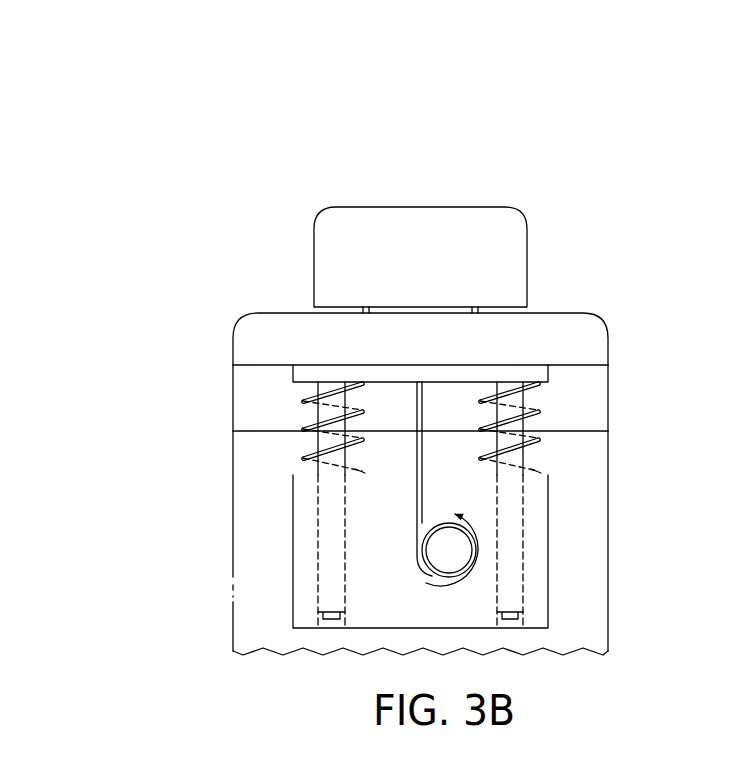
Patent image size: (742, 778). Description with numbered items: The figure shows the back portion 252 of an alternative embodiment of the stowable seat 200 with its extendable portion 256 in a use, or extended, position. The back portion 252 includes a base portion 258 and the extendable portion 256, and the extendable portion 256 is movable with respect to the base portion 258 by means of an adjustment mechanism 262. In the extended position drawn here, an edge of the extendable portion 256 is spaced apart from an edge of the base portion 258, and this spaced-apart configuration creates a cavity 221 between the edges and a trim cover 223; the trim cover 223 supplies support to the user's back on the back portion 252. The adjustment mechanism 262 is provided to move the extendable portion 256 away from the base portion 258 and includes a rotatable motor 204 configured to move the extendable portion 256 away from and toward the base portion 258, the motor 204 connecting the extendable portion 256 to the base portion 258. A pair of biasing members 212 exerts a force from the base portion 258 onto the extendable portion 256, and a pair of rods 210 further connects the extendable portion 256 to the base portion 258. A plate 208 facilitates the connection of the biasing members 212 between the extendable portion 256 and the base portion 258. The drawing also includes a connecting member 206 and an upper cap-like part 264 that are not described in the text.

The stowable seat 200 is at (592, 134).
The rotatable motor 204 is at (421, 572).
The connecting rod 206 is at (422, 504).
The plate 208 is at (538, 378).
The pair of rods 210 is at (518, 456).
The pair of biasing members 212 is at (311, 432).
The cavity 221 is at (265, 393).
The trim cover 223 is at (582, 422).
The back portion 252 is at (208, 443).
The extendable portion 256 is at (598, 354).
The base portion 258 is at (241, 503).
The adjustment mechanism 262 is at (240, 301).
The cap 264 is at (522, 267).